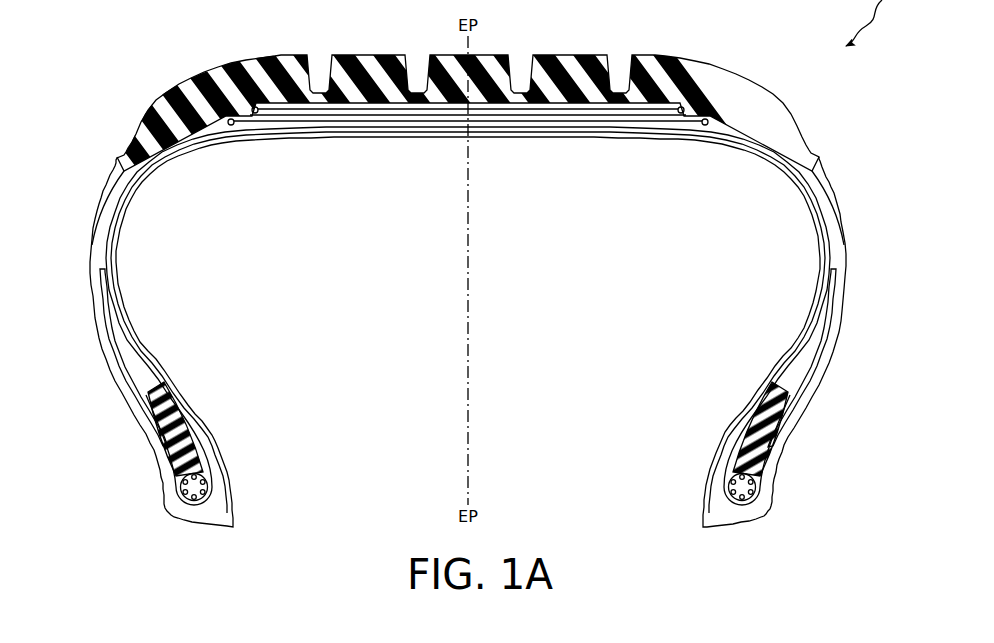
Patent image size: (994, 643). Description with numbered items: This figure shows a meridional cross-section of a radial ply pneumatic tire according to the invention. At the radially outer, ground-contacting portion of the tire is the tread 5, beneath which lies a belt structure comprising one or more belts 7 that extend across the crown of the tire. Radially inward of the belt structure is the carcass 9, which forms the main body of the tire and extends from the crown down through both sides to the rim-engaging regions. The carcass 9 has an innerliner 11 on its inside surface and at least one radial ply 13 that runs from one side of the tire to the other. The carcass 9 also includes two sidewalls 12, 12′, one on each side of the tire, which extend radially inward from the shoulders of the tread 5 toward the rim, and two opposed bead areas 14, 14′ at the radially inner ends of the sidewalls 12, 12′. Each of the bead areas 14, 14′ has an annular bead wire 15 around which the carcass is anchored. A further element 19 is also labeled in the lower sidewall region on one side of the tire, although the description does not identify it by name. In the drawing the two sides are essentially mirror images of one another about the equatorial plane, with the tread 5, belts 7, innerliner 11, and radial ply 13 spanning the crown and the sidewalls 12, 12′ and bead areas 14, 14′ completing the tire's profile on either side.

The tread 5 is at (371, 55).
The belt 7 is at (563, 110).
The carcass 9 is at (410, 132).
The innerliner 11 is at (817, 312).
The sidewall 12 is at (845, 295).
The sidewall 12′ is at (92, 295).
The radial ply 13 is at (827, 286).
The bead area 14 is at (810, 468).
The bead area 14′ is at (138, 489).
The annular bead wire 15 is at (745, 498).
The chafer 19 is at (827, 333).